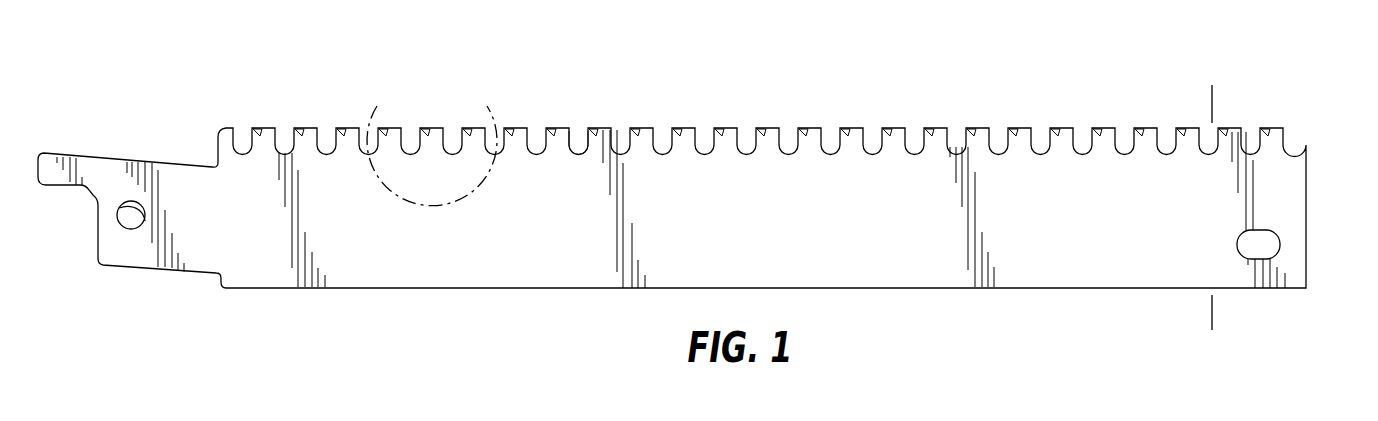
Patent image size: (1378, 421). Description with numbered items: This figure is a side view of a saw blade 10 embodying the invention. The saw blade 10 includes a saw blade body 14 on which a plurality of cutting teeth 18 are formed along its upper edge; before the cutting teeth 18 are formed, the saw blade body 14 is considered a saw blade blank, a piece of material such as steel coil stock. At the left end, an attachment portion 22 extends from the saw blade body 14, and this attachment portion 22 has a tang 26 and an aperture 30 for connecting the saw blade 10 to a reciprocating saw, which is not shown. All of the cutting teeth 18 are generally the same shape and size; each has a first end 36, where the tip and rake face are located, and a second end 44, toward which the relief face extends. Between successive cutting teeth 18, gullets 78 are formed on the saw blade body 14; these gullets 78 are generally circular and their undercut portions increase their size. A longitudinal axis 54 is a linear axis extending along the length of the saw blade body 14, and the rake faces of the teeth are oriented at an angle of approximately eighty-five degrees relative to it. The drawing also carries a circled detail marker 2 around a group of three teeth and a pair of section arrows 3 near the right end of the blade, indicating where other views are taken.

The saw blade 10 is at (917, 61).
The saw blade body 14 is at (1087, 260).
The cutting teeth 18 is at (858, 127).
The attachment portion 22 is at (137, 248).
The tang 26 is at (77, 156).
The aperture 30 is at (124, 202).
The first end 36 is at (546, 125).
The second end 44 is at (577, 125).
The longitudinal axis 54 is at (1317, 184).
The gullets 78 is at (707, 137).
The section indicator for FIG. 2 is at (388, 93).
The section line for FIG. 3 is at (1213, 102).